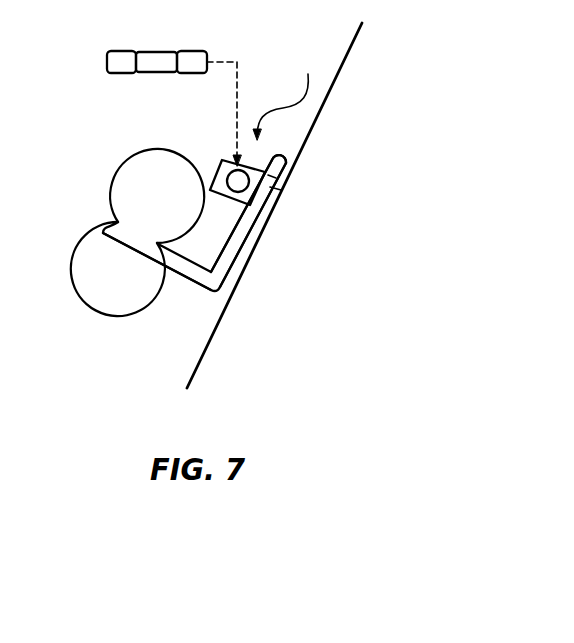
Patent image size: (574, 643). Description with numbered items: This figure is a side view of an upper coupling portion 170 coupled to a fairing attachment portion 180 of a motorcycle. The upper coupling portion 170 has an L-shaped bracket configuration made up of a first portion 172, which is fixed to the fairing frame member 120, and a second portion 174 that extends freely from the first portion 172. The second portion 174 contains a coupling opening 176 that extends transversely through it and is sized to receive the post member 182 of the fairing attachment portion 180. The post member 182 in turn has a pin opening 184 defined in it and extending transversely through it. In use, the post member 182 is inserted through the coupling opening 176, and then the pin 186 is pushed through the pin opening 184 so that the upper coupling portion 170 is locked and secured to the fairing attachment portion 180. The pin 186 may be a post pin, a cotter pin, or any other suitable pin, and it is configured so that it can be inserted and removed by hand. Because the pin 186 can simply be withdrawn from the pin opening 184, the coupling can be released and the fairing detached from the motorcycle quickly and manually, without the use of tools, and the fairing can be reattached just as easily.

The fairing frame member 120 is at (106, 174).
The upper coupling portion 170 is at (153, 284).
The first portion 172 is at (184, 279).
The second portion 174 is at (246, 242).
The coupling opening 176 is at (279, 186).
The fairing attachment portion 180 is at (290, 95).
The post member 182 is at (221, 158).
The pin opening 184 is at (239, 193).
The pin 186 is at (165, 50).